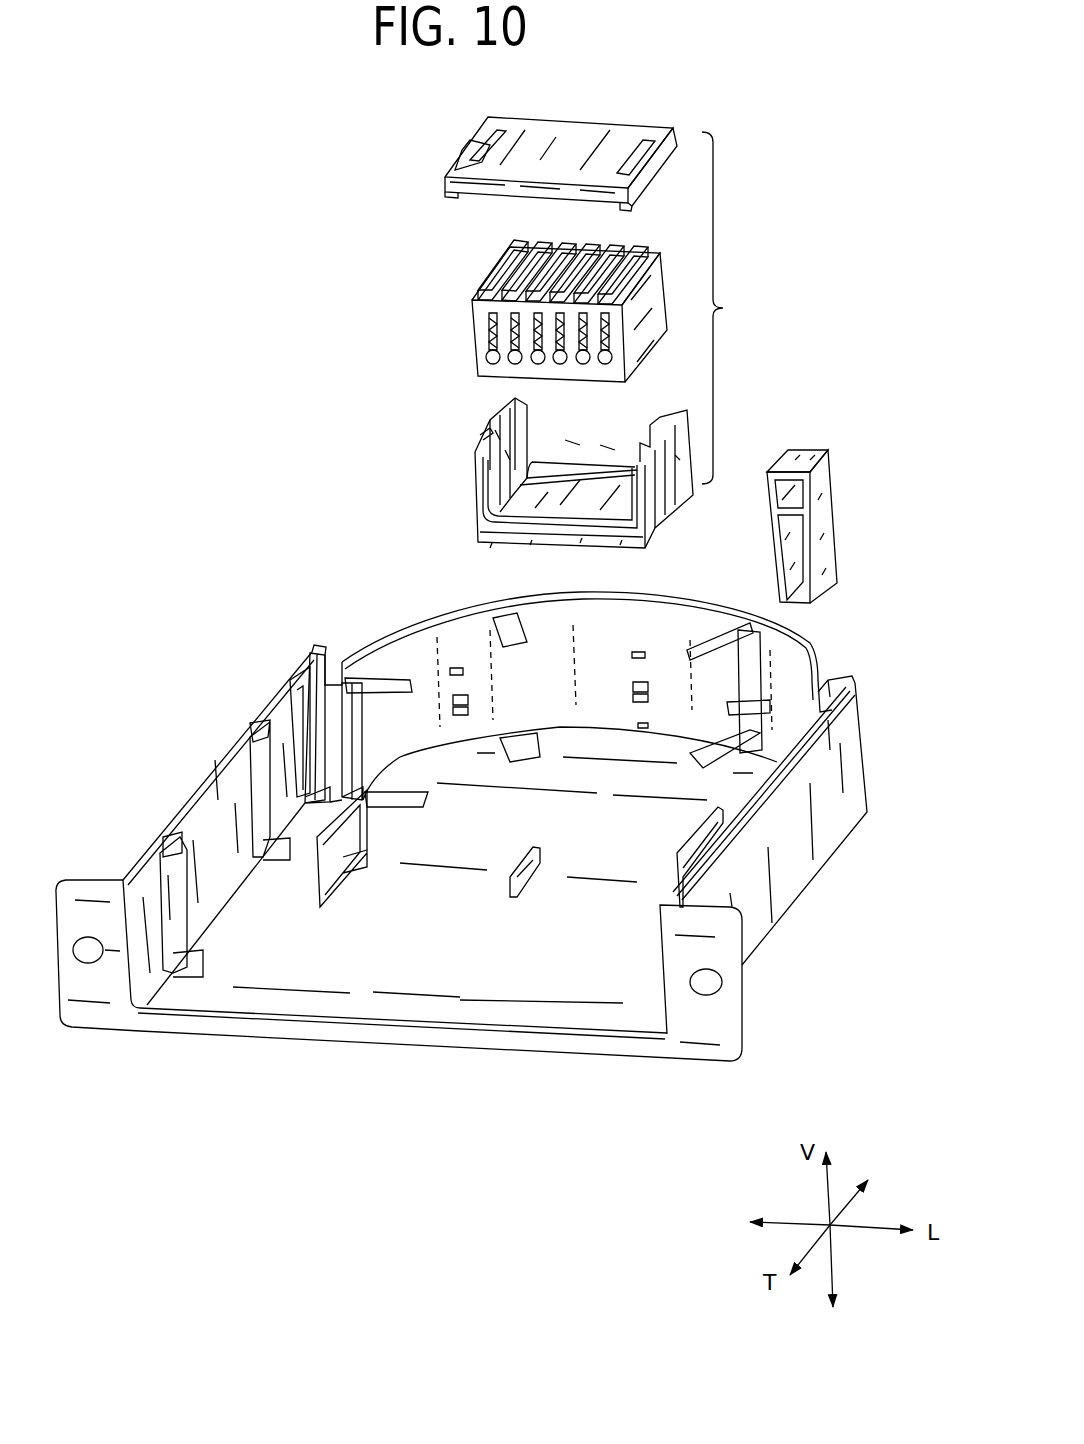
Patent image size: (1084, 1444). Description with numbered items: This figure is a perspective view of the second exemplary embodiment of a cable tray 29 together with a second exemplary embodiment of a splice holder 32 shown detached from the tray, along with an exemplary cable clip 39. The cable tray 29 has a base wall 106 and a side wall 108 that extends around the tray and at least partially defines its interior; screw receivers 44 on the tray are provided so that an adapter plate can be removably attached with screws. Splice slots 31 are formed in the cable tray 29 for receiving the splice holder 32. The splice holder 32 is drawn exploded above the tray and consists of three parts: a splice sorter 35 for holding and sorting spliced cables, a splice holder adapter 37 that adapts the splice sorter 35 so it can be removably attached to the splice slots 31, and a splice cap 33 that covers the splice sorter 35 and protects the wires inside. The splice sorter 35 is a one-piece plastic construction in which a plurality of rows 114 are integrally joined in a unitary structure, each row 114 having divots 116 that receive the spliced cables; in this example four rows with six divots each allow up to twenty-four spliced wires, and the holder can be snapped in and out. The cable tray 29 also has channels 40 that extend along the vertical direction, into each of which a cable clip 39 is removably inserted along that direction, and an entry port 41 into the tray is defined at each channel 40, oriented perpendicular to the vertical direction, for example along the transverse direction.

The cable tray 29 is at (502, 838).
The splice slots 31 is at (705, 857).
The splice holder 32 is at (731, 308).
The splice cap 33 is at (433, 162).
The splice sorter 35 is at (477, 303).
The splice holder adapter 37 is at (458, 475).
The cable clip 39 is at (838, 532).
The channels 40 is at (318, 652).
The entry port 41 is at (306, 727).
The screw receivers 44 is at (73, 967).
The base wall 106 is at (497, 836).
The side wall 108 is at (830, 817).
The rows 114 is at (477, 342).
The divots 116 is at (480, 300).